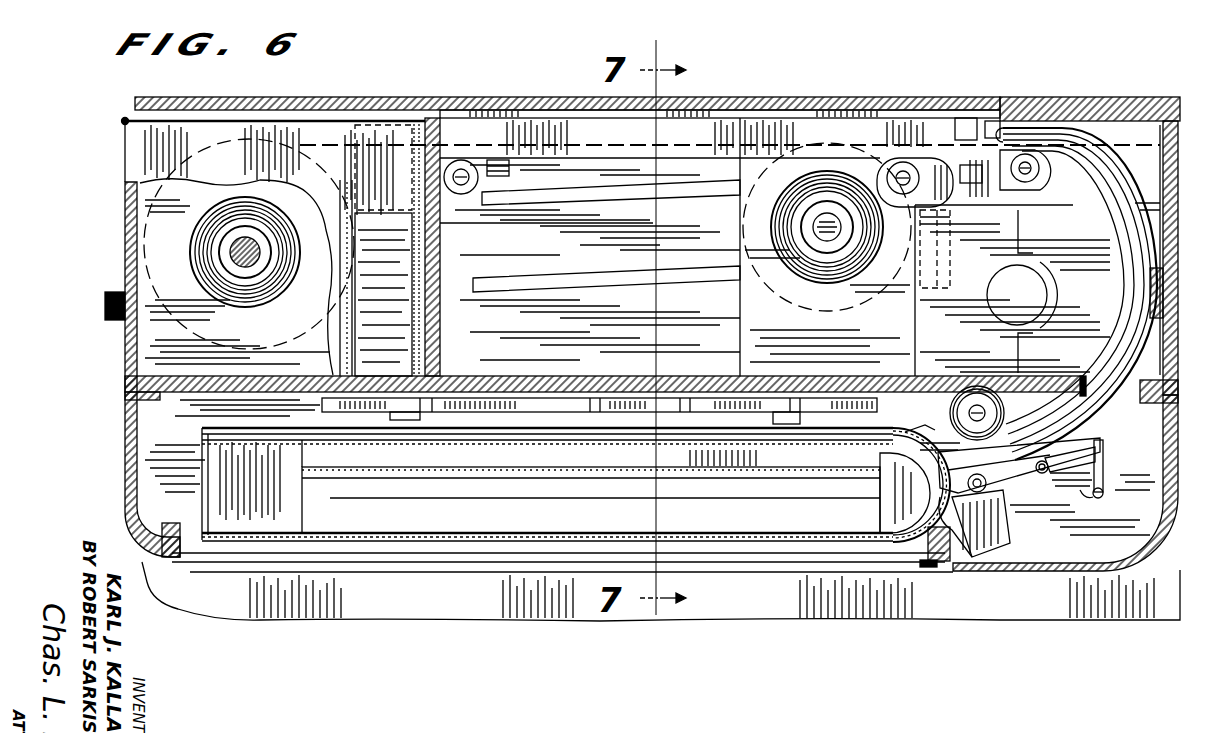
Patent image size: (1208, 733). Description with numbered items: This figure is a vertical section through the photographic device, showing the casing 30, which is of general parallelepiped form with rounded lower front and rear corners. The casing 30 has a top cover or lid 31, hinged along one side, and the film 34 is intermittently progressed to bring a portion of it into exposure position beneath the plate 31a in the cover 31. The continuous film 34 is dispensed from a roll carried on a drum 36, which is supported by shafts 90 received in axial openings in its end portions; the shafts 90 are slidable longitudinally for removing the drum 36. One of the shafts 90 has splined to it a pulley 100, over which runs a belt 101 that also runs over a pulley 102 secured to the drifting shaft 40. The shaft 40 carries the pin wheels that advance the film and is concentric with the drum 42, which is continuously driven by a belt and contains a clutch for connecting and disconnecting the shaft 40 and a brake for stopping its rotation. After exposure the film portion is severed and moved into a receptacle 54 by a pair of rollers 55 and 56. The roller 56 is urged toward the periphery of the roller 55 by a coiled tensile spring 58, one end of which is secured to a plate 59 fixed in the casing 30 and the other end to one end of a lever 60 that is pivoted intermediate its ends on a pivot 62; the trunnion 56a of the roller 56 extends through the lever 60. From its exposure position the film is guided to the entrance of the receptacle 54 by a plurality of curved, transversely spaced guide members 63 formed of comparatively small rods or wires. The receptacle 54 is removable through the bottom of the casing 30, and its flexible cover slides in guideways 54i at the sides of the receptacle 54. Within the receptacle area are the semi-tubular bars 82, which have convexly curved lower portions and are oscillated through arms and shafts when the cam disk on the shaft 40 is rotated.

The casing 30 is at (1080, 588).
The top cover or lid 31 is at (1013, 107).
The plate 31a is at (833, 106).
The film 34 is at (602, 150).
The drum 36 is at (281, 338).
The drifting shaft 40 is at (838, 228).
The drum 42 is at (792, 312).
The receptacle 54 is at (772, 541).
The guideways 54i is at (880, 515).
The roller 55 is at (940, 412).
The roller 56 is at (1018, 513).
The trunnion 56a is at (975, 522).
The coiled tensile spring 58 is at (1084, 492).
The plate 59 is at (1098, 430).
The lever 60 is at (1105, 445).
The pivot 62 is at (1042, 475).
The curved guide members 63 is at (1101, 182).
The bars 82 is at (616, 422).
The supporting shafts 90 is at (232, 262).
The pulley 100 is at (197, 270).
The belt 101 is at (488, 287).
The pulley 102 is at (840, 290).